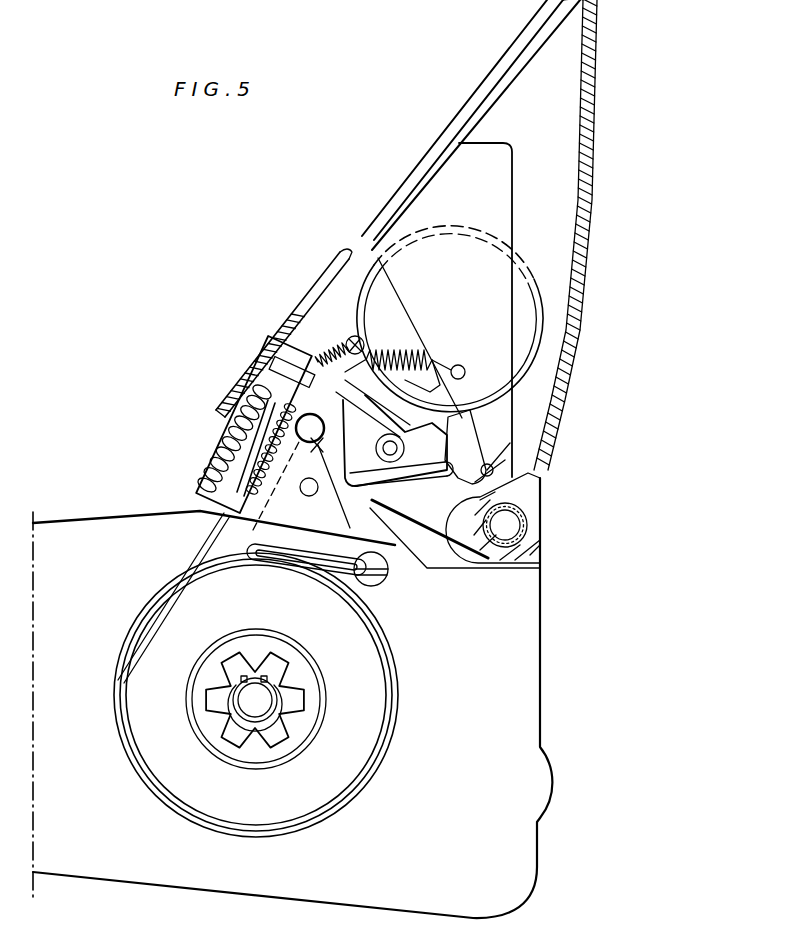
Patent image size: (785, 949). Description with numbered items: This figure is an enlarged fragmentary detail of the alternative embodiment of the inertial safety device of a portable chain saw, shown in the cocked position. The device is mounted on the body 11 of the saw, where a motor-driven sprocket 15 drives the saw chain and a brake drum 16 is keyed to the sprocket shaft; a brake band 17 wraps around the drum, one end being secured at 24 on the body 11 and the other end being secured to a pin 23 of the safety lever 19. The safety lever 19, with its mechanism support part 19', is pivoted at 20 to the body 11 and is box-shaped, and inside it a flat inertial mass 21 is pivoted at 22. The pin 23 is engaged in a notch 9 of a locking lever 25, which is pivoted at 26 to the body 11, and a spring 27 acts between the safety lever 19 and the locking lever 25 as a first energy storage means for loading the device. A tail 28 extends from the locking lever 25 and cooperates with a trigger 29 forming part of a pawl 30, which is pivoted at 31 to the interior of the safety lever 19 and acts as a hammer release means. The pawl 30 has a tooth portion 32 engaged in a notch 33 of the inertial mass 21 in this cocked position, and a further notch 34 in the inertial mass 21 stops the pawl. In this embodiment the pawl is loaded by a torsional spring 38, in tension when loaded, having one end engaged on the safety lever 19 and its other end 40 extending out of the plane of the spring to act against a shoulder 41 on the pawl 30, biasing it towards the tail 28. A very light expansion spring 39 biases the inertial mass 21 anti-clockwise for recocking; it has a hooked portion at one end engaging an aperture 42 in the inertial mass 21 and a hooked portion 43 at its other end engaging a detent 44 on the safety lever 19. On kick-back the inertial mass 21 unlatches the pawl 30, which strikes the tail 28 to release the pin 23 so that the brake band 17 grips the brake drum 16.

The notch 9 is at (326, 418).
The body 11 is at (580, 600).
The sprocket 15 is at (280, 733).
The brake drum 16 is at (340, 778).
The brake band 17 is at (176, 590).
The safety lever 19 is at (495, 235).
The mechanism support part 19' is at (276, 333).
The pivot 20 is at (505, 530).
The inertial mass 21 is at (482, 145).
The pivot 22 is at (520, 480).
The pin 23 is at (301, 484).
The securing point 24 is at (380, 579).
The locking lever 25 is at (200, 493).
The pivot 26 is at (316, 495).
The spring 27 is at (224, 462).
The tail 28 is at (438, 479).
The trigger 29 is at (448, 477).
The pawl 30 is at (395, 440).
The pivot 31 is at (380, 455).
The tooth portion 32 is at (459, 410).
The notch 33 is at (466, 421).
The notch 34 is at (506, 449).
The torsional spring 38 is at (541, 270).
The expansion spring 39 is at (405, 347).
The end 40 is at (425, 407).
The shoulder 41 is at (392, 379).
The aperture 42 is at (460, 365).
The hooked portion 43 is at (354, 337).
The detent 44 is at (340, 346).